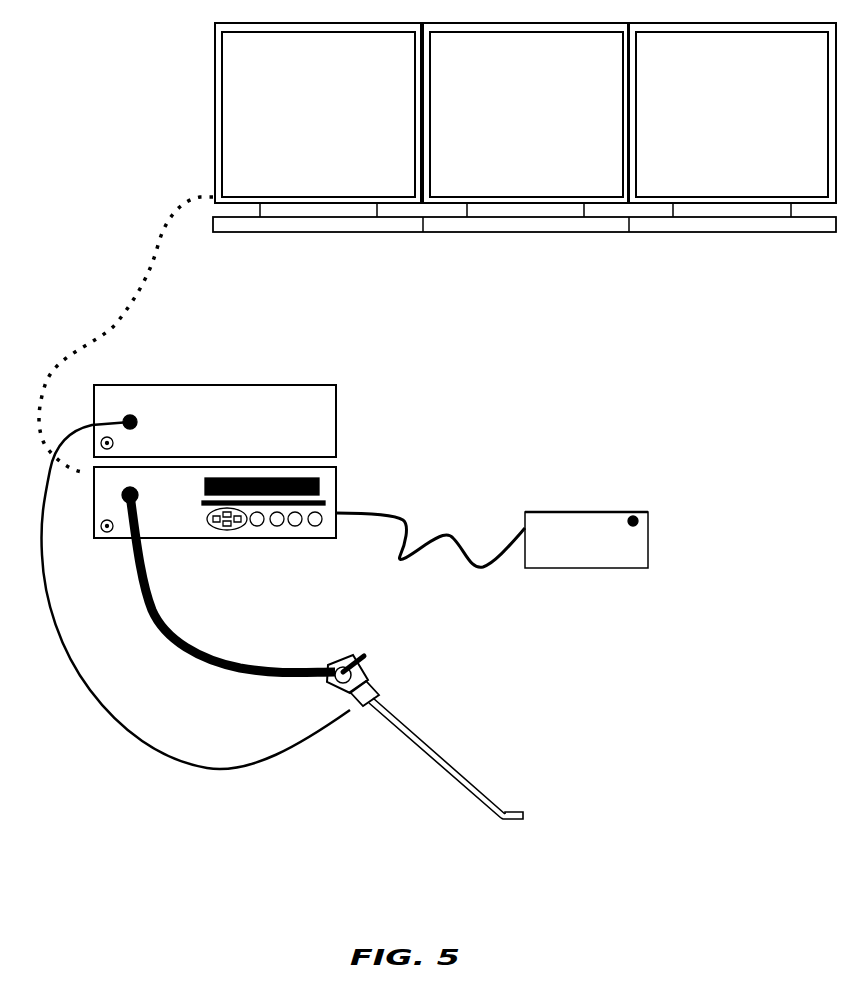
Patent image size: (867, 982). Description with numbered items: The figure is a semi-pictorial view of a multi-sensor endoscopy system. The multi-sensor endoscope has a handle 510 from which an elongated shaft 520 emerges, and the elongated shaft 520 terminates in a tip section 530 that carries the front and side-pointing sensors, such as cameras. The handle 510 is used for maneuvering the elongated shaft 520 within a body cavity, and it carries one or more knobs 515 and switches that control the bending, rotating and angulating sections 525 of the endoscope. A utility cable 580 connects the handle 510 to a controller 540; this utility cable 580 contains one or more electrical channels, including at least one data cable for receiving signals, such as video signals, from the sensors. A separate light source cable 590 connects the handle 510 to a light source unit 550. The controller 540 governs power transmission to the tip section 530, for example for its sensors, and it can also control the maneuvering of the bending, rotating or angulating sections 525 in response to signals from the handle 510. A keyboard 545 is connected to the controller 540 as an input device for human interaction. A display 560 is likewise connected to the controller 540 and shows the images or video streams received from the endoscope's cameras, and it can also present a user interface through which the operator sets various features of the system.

The handle 510 is at (371, 675).
The knobs 515 is at (318, 683).
The elongated shaft 520 is at (442, 753).
The bending, rotating and angulating sections 525 is at (508, 837).
The tip section 530 is at (523, 816).
The controller 540 is at (336, 475).
The keyboard 545 is at (645, 515).
The light source unit 550 is at (336, 412).
The display 560 is at (527, 185).
The utility cable 580 is at (178, 630).
The light source cable 590 is at (80, 670).